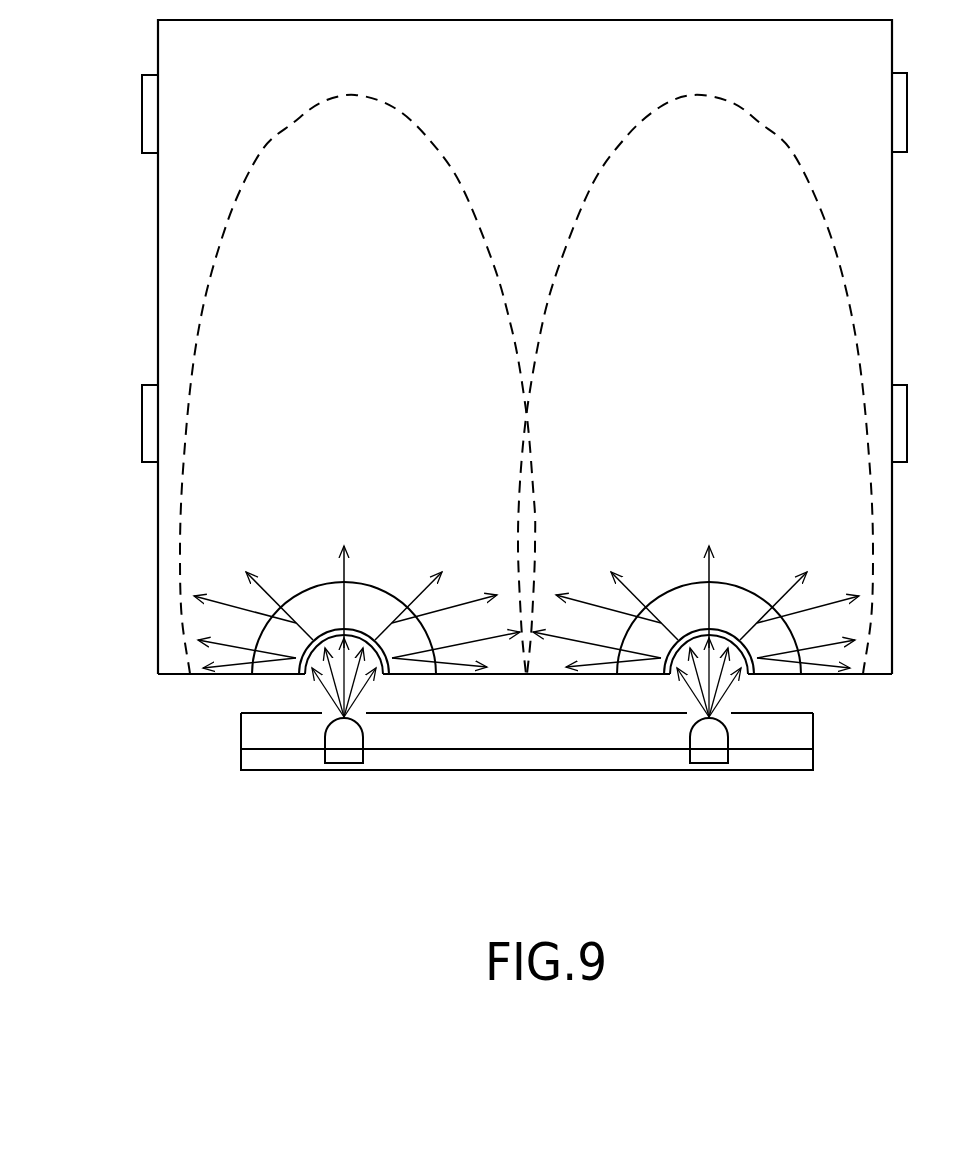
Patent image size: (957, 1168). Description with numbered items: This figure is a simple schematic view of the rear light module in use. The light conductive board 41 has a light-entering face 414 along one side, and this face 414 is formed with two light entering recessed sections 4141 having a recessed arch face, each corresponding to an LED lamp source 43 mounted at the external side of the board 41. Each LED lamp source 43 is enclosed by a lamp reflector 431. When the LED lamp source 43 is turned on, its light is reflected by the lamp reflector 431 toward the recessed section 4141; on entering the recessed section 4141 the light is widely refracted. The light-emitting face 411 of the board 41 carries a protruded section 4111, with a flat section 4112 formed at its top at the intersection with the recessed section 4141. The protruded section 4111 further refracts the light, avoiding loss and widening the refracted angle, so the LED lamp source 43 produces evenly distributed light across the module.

The light conductive board 41 is at (127, 239).
The light-emitting face 411 is at (187, 323).
The protruded section 4111 is at (310, 597).
The flat section 4112 is at (305, 650).
The light-entering face 414 is at (200, 675).
The light entering recessed section 4141 is at (307, 675).
The lamp reflector 431 is at (253, 737).
The LED lamp source 43 is at (347, 760).